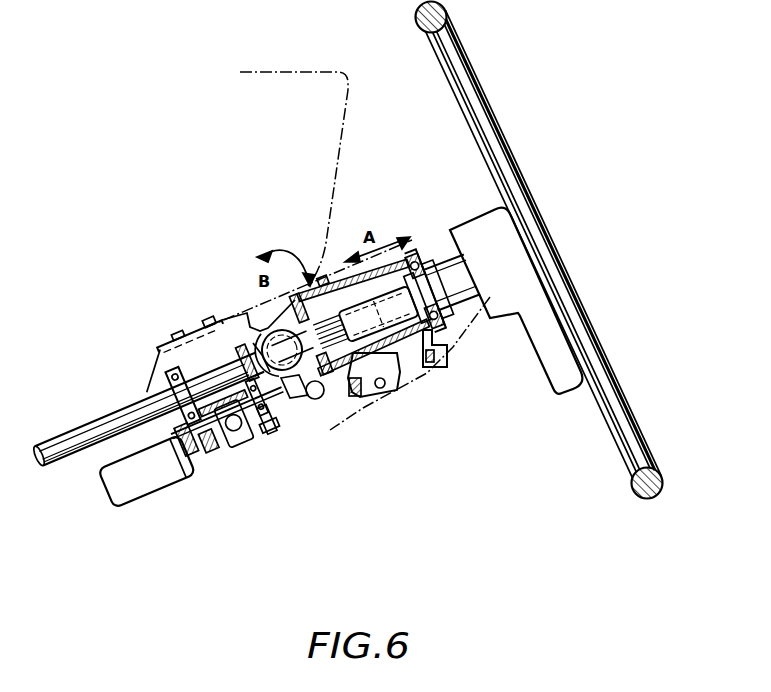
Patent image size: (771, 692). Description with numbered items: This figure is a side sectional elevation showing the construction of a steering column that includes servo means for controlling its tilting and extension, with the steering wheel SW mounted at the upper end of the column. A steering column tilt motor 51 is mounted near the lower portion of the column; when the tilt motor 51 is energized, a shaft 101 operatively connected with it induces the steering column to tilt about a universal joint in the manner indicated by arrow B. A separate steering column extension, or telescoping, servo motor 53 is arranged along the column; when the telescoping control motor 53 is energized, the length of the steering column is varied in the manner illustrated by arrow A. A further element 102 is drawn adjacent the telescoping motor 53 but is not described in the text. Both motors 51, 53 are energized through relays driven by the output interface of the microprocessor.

The steering wheel SW is at (501, 150).
The steering column tilt motor 51 is at (152, 483).
The shaft 101 is at (267, 436).
The steering column extension servo motor 53 is at (364, 400).
The bracket 102 is at (408, 367).